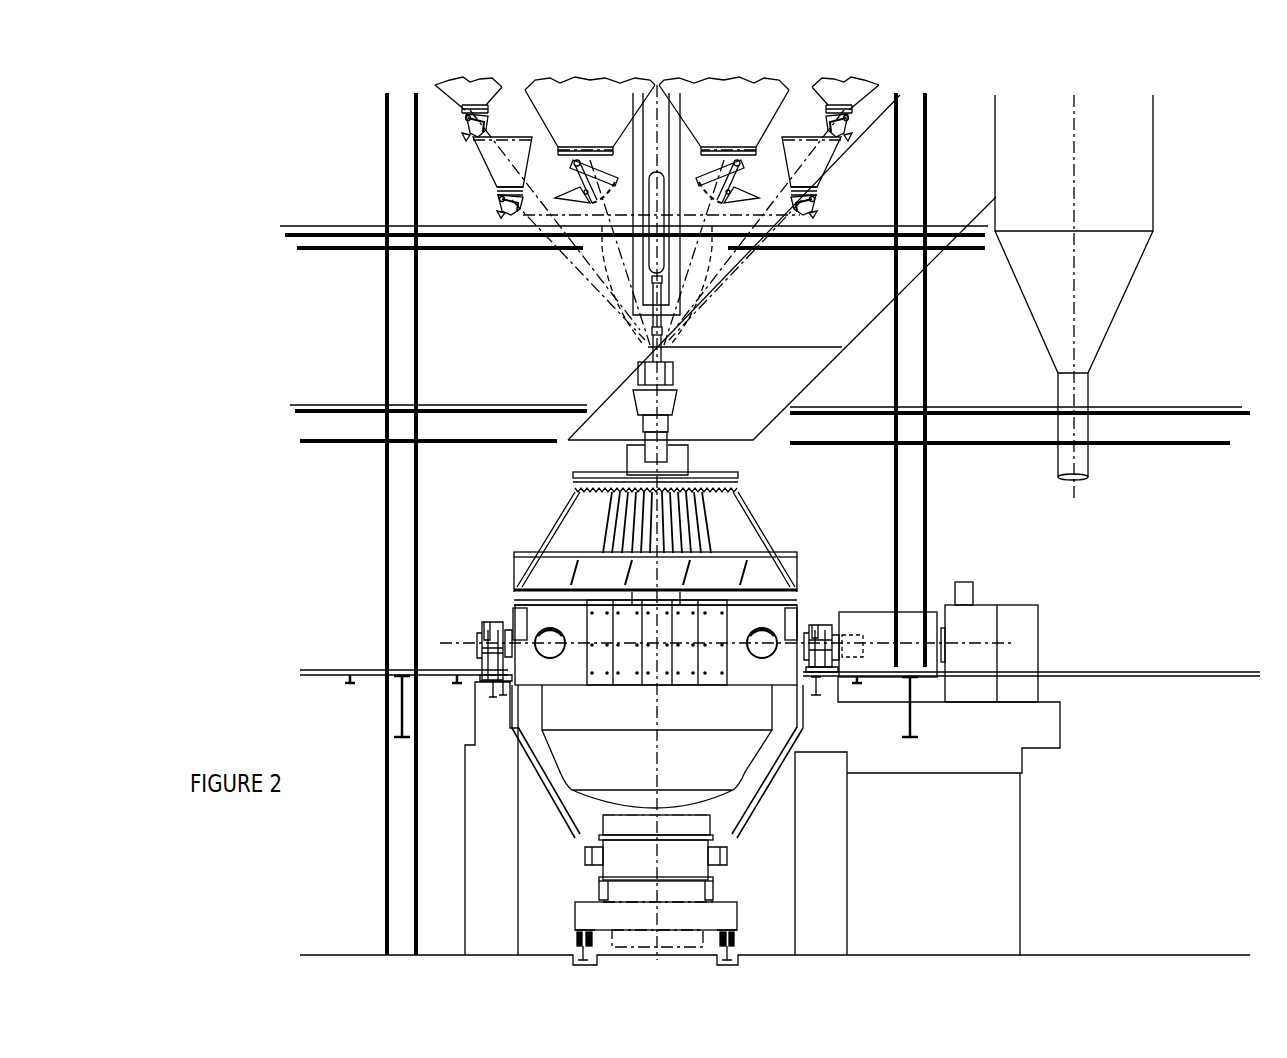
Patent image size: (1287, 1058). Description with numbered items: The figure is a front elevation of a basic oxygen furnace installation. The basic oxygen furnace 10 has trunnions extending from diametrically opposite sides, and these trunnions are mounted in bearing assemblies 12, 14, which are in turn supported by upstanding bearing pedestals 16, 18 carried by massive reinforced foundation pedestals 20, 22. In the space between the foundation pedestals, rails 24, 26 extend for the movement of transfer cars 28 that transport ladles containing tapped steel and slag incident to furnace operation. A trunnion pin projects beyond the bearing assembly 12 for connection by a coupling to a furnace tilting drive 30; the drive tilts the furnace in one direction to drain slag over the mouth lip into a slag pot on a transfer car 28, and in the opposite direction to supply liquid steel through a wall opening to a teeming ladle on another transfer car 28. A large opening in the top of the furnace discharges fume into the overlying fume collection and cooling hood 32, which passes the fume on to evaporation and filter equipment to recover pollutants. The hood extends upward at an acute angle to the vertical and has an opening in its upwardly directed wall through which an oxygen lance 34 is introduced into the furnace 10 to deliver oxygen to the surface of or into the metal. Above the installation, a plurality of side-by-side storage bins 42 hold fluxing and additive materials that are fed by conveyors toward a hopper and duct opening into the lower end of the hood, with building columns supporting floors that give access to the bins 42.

The basic oxygen furnace 10 is at (803, 567).
The bearing assembly 12 is at (820, 625).
The bearing assembly 14 is at (493, 622).
The bearing pedestal 16 is at (823, 687).
The bearing pedestal 18 is at (487, 693).
The foundation pedestal 20 is at (835, 868).
The foundation pedestal 22 is at (504, 868).
The rail 24 is at (576, 944).
The rail 26 is at (737, 948).
The transfer car 28 is at (733, 913).
The furnace tilting drive 30 is at (930, 612).
The fume collection and cooling hood 32 is at (824, 319).
The oxygen lance 34 is at (652, 242).
The storage bin 42 is at (818, 168).